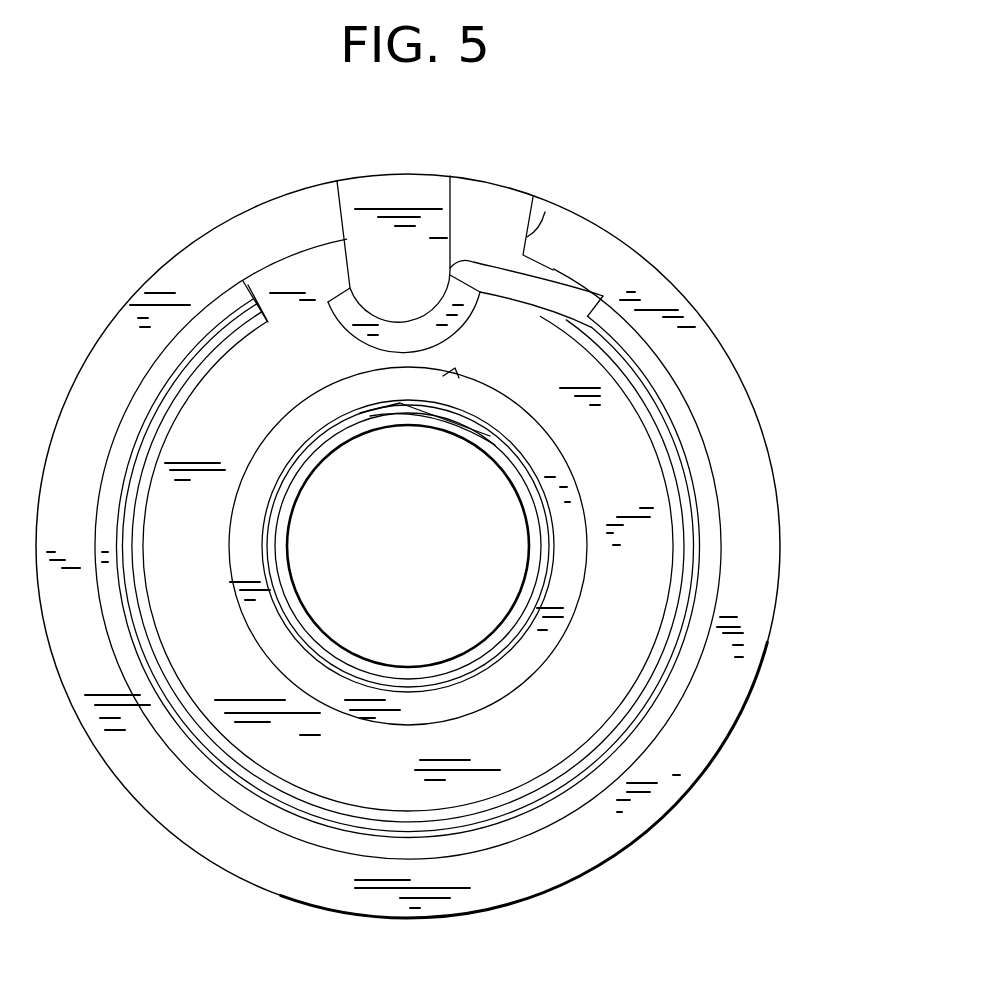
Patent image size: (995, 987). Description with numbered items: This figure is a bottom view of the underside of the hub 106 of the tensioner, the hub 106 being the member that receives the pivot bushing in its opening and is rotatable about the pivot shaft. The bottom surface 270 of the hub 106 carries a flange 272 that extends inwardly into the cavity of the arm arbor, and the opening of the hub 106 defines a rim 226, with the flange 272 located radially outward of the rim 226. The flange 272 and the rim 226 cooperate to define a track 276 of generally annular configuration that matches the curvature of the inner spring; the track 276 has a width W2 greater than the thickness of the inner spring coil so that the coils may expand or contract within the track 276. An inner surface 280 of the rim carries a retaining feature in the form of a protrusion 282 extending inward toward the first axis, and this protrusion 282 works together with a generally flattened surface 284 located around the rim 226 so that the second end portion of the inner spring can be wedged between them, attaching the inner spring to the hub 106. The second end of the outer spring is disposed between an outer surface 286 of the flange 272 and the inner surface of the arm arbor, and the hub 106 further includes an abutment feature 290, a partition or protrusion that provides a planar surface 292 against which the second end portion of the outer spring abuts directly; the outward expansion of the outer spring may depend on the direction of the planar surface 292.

The hub 106 is at (577, 903).
The rim 226 is at (270, 455).
The bottom surface 270 is at (268, 757).
The flange 272 is at (627, 752).
The track 276 is at (540, 750).
The inner surface 280 is at (530, 303).
The protrusion 282 is at (414, 297).
The flattened surface 284 is at (452, 380).
The outer surface 286 is at (600, 297).
The abutment feature 290 is at (533, 217).
The planar surface 292 is at (527, 237).
The width W2 is at (625, 697).